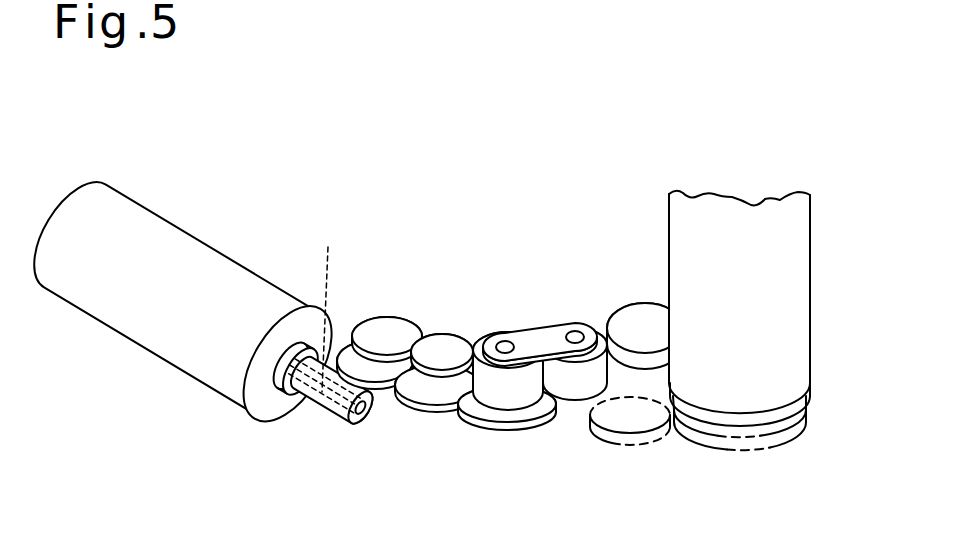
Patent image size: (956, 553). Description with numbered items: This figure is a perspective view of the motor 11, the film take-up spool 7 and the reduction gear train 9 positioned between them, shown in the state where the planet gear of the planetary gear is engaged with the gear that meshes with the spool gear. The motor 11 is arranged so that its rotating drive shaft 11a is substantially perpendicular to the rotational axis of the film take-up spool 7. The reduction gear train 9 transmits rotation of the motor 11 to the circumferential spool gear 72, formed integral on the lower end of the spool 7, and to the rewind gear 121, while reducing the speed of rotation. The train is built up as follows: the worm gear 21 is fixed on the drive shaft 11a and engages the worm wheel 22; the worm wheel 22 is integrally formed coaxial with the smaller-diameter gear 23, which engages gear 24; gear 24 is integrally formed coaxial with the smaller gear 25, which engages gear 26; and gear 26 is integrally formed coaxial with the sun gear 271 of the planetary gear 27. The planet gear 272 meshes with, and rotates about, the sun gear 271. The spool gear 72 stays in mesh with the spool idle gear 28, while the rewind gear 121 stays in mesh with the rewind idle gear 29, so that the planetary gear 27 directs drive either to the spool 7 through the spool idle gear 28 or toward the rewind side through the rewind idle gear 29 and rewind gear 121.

The film take-up spool 7 is at (831, 294).
The circumferential spool gear 72 is at (793, 406).
The rewind gear 121 is at (787, 438).
The reduction gear train 9 is at (472, 290).
The motor 11 is at (144, 221).
The rotating drive shaft 11a is at (325, 304).
The worm gear 21 is at (323, 398).
The worm wheel 22 is at (390, 393).
The spur gear 23 is at (373, 354).
The spur gear 24 is at (438, 408).
The spur gear 25 is at (436, 374).
The spur gear 26 is at (507, 425).
The planetary gear 27 is at (534, 310).
The sun gear 271 is at (493, 392).
The planet gear 272 is at (578, 385).
The spool idle gear 28 is at (630, 353).
The rewind idle gear 29 is at (635, 452).